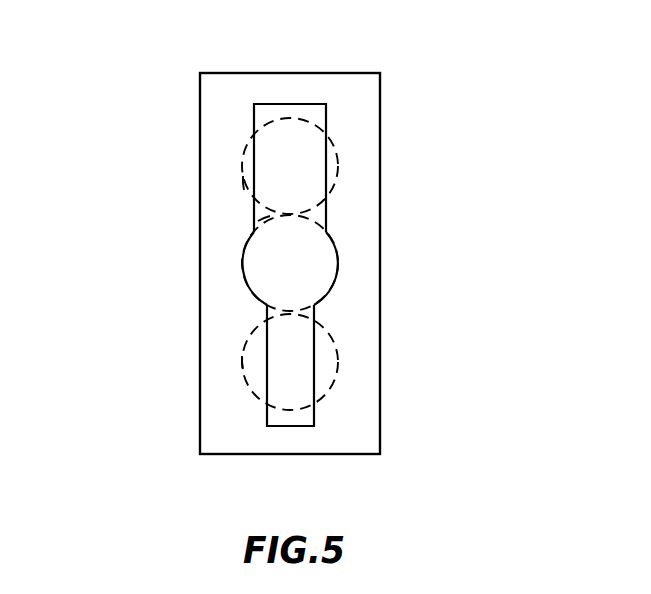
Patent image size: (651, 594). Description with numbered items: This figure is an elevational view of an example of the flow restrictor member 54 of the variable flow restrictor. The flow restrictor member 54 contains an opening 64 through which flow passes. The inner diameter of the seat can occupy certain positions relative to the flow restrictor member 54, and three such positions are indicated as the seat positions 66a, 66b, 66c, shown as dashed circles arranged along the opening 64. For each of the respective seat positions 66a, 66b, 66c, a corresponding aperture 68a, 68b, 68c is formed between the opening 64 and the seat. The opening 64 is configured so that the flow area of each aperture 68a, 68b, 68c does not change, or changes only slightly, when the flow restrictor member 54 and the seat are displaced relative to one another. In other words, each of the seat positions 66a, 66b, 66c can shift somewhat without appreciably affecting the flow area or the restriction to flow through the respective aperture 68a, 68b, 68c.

The flow restrictor member 54 is at (470, 61).
The opening 64 is at (320, 213).
The first seat position 66a is at (243, 182).
The second seat position 66b is at (258, 214).
The third seat position 66c is at (242, 362).
The first aperture 68a is at (308, 153).
The second aperture 68b is at (318, 269).
The third aperture 68c is at (293, 364).